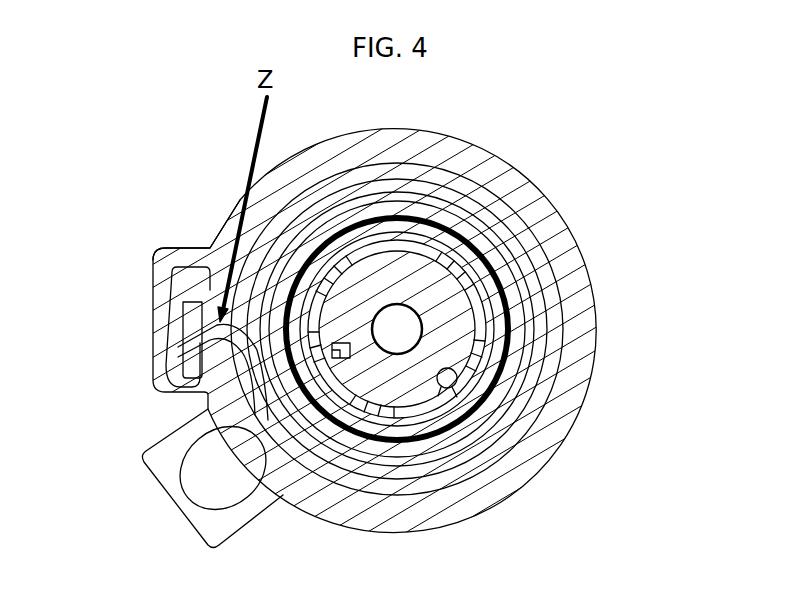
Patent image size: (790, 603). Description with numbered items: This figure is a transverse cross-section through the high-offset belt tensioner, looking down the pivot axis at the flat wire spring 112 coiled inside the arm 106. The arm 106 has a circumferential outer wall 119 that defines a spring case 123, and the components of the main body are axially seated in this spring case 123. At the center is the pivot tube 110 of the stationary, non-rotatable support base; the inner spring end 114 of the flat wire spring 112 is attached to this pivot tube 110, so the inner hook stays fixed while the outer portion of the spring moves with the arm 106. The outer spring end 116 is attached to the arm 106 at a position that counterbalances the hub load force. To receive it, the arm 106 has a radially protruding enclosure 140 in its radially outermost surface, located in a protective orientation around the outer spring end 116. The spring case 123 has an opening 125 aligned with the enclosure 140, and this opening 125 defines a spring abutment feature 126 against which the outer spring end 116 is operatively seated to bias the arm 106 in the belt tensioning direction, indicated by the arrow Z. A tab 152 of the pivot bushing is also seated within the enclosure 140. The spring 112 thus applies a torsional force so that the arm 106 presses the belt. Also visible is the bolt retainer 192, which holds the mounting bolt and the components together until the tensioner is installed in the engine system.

The arm 106 is at (580, 237).
The pivot tube 110 is at (443, 290).
The flat wire spring 112 is at (530, 390).
The inner spring end 114 is at (340, 360).
The outer spring end 116 is at (180, 389).
The circumferential outer wall 119 is at (580, 288).
The spring case 123 is at (562, 308).
The opening 125 is at (195, 302).
The spring abutment feature 126 is at (203, 400).
The enclosure 140 is at (152, 282).
The tab 152 is at (197, 295).
The bolt retainer 192 is at (143, 455).